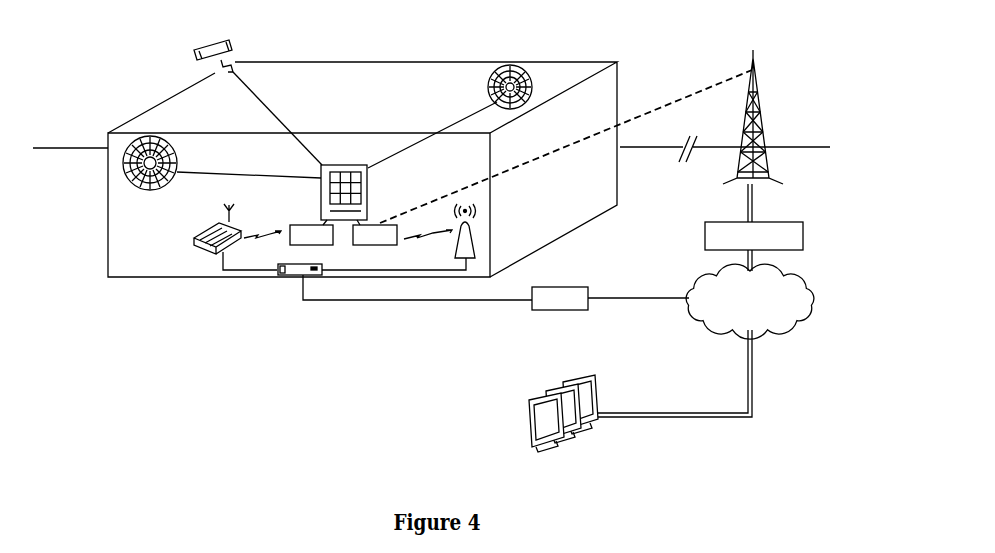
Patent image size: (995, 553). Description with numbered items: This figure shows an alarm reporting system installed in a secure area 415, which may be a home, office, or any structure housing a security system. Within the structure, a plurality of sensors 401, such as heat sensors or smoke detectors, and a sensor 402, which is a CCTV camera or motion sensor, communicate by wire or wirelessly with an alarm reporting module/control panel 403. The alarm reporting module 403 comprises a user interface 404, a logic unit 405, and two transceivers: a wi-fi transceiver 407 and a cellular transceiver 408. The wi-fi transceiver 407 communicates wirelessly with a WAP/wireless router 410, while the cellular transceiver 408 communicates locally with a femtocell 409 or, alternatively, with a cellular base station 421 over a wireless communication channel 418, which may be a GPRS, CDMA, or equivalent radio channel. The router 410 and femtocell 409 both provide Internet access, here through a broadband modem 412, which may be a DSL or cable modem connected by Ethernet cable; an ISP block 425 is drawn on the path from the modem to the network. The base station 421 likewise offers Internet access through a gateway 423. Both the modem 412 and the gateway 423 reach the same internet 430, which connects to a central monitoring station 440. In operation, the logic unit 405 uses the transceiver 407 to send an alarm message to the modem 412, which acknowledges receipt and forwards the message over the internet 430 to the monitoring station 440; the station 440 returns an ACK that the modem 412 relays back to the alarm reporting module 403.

The sensors 401 is at (123, 163).
The sensor 402 is at (194, 51).
The alarm reporting module/control panel 403 is at (349, 165).
The user interface 404 is at (368, 192).
The logic unit 405 is at (322, 217).
The wi-fi transceiver 407 is at (288, 235).
The cellular transceiver 408 is at (402, 235).
The femtocell 409 is at (477, 247).
The WAP/wireless router 410 is at (193, 240).
The broadband modem 412 is at (270, 271).
The secure area 415 is at (108, 260).
The communication channel 418 is at (677, 99).
The cellular base station 421 is at (770, 113).
The gateway 423 is at (803, 242).
The internet service provider 425 is at (556, 311).
The internet 430 is at (817, 298).
The central monitoring station 440 is at (562, 449).